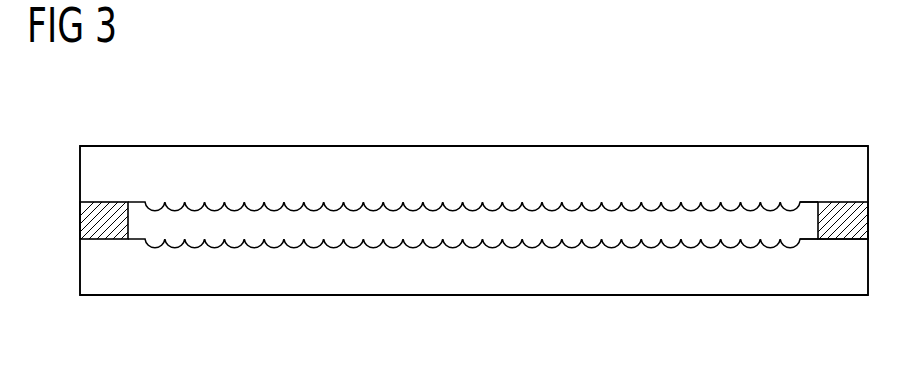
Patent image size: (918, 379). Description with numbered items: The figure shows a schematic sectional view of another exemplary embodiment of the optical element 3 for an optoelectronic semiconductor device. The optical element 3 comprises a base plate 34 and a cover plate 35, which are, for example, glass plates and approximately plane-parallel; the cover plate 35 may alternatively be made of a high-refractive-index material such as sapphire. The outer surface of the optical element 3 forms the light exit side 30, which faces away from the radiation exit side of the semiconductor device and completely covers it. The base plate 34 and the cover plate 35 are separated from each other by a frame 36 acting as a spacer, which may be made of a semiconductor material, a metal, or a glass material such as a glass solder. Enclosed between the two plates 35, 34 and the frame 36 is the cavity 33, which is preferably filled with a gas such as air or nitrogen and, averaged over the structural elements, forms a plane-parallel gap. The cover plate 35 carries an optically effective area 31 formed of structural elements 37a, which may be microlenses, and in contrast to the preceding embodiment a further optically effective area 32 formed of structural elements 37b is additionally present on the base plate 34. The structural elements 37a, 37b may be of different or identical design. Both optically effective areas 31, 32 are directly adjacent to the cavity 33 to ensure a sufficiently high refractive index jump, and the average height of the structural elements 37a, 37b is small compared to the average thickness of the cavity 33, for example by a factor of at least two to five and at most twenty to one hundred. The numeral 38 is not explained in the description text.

The optical element 3 is at (803, 68).
The light exit side 30 is at (350, 146).
The optically effective area 31 is at (692, 212).
The further optically effective area 32 is at (692, 250).
The cavity 33 is at (240, 227).
The base plate 34 is at (260, 285).
The cover plate 35 is at (593, 156).
The frame 36 is at (83, 222).
The structural elements of the optically effective area 37a is at (790, 202).
The structural elements of the further optically effective area 37b is at (790, 250).
The bottom wall 38 is at (428, 295).